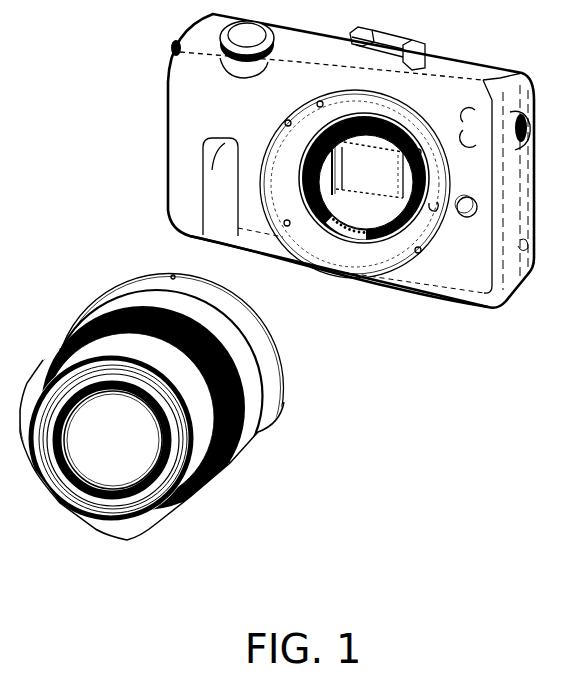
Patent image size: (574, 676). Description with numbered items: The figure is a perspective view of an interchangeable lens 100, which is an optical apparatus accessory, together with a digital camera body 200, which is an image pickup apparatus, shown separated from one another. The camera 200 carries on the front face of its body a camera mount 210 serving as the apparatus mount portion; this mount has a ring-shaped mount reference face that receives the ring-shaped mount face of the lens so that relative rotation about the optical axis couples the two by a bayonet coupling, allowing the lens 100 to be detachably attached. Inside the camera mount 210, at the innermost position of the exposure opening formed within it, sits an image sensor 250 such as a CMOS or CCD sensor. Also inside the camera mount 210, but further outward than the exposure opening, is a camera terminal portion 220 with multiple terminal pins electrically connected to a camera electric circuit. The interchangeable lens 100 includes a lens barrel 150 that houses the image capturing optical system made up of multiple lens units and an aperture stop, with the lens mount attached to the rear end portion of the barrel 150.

The interchangeable lens 100 is at (259, 461).
The lens barrel 150 is at (268, 360).
The digital camera body 200 is at (413, 100).
The camera mount 210 is at (327, 262).
The camera terminal portion 220 is at (358, 252).
The image sensor 250 is at (383, 172).